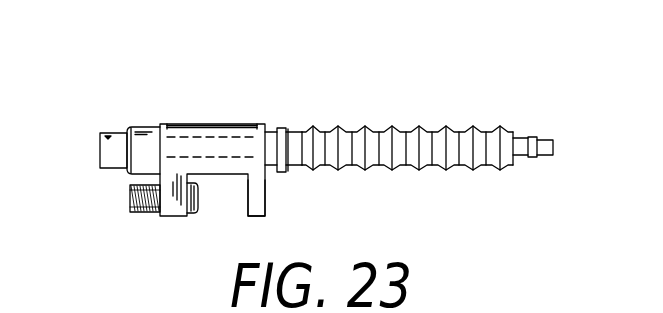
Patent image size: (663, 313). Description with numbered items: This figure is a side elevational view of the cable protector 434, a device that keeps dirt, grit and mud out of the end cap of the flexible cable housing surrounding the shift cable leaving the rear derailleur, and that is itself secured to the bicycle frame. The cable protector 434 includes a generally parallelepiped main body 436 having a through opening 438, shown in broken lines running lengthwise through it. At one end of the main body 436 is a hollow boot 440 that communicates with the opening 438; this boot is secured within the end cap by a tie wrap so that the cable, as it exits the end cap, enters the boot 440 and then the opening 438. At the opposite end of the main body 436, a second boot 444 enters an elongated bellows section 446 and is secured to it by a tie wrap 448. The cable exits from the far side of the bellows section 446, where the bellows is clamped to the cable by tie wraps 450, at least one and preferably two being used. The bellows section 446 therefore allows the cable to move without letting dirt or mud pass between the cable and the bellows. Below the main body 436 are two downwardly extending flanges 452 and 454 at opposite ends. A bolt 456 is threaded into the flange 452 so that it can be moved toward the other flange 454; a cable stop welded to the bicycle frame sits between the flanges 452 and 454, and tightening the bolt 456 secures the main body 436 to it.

The cable protector 434 is at (229, 97).
The main body 436 is at (251, 124).
The through opening 438 is at (187, 137).
The hollow boot 440 is at (112, 133).
The boot 444 is at (268, 175).
The bellows section 446 is at (390, 127).
The tie wrap 448 is at (281, 173).
The tie wraps 450 is at (536, 137).
The flange 452 is at (173, 217).
The flange 454 is at (252, 217).
The bolt 456 is at (128, 203).